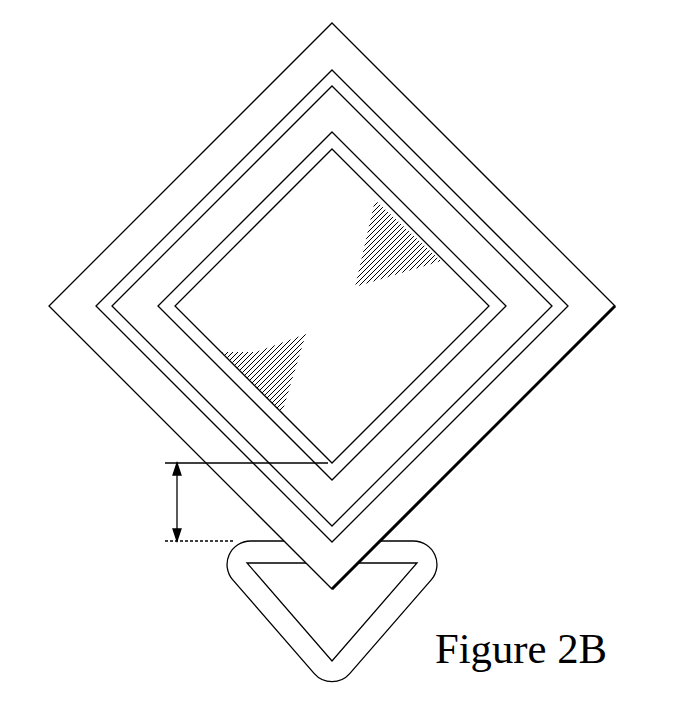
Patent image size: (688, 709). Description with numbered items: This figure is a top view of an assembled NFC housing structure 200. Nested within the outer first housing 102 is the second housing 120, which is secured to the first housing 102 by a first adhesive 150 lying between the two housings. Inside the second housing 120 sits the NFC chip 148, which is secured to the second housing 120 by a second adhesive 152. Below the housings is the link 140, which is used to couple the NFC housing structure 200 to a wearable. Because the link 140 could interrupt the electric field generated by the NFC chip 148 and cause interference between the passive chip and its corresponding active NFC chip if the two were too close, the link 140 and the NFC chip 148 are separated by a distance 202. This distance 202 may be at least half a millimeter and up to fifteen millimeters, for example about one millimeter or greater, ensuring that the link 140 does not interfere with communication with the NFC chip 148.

The assembled NFC housing structure 200 is at (329, 352).
The first housing 102 is at (190, 162).
The first adhesive 150 is at (278, 132).
The second housing 120 is at (413, 182).
The second adhesive 152 is at (440, 363).
The NFC chip 148 is at (355, 322).
The link 140 is at (272, 627).
The distance 202 is at (177, 500).